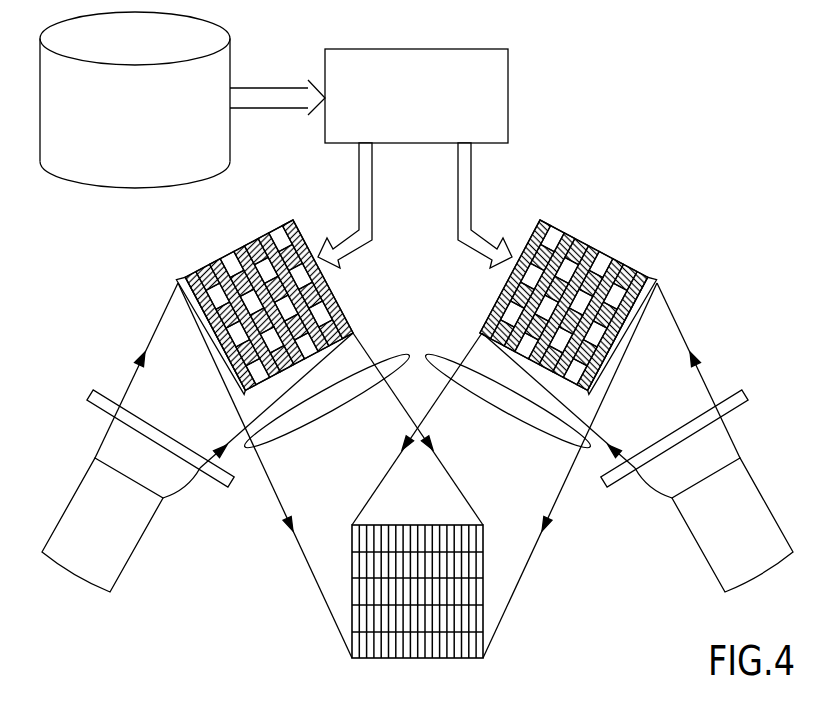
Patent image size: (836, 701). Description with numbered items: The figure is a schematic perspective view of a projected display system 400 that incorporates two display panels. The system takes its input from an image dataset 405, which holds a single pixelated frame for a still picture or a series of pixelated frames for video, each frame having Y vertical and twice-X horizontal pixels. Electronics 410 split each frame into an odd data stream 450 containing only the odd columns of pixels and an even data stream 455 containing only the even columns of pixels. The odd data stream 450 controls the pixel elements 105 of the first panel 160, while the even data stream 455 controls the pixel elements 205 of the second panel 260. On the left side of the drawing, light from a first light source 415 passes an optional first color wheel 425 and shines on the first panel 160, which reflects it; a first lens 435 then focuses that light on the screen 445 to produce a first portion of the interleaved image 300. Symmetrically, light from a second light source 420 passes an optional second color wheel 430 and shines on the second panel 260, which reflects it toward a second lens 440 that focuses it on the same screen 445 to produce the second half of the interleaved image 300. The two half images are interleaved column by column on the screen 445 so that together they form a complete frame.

The pixel elements 105 is at (282, 235).
The first panel 160 is at (236, 243).
The pixel elements 205 is at (551, 232).
The second panel 260 is at (606, 246).
The interleaved image 300 is at (378, 658).
The display system 400 is at (642, 122).
The image dataset 405 is at (148, 173).
The electronics 410 is at (433, 128).
The first light source 415 is at (110, 553).
The second light source 420 is at (748, 537).
The first color wheel 425 is at (172, 441).
The second color wheel 430 is at (672, 440).
The first lens 435 is at (312, 410).
The second lens 440 is at (523, 410).
The screen 445 is at (495, 568).
The odd data stream 450 is at (358, 182).
The even data stream 455 is at (472, 179).